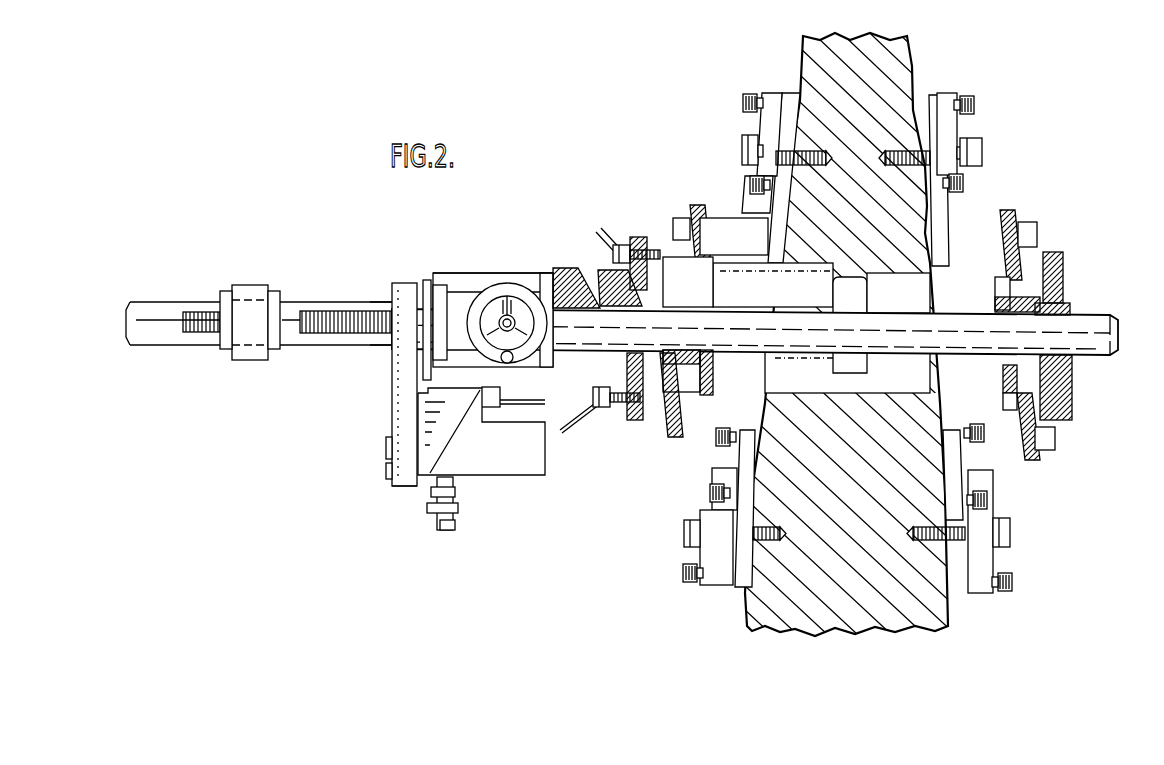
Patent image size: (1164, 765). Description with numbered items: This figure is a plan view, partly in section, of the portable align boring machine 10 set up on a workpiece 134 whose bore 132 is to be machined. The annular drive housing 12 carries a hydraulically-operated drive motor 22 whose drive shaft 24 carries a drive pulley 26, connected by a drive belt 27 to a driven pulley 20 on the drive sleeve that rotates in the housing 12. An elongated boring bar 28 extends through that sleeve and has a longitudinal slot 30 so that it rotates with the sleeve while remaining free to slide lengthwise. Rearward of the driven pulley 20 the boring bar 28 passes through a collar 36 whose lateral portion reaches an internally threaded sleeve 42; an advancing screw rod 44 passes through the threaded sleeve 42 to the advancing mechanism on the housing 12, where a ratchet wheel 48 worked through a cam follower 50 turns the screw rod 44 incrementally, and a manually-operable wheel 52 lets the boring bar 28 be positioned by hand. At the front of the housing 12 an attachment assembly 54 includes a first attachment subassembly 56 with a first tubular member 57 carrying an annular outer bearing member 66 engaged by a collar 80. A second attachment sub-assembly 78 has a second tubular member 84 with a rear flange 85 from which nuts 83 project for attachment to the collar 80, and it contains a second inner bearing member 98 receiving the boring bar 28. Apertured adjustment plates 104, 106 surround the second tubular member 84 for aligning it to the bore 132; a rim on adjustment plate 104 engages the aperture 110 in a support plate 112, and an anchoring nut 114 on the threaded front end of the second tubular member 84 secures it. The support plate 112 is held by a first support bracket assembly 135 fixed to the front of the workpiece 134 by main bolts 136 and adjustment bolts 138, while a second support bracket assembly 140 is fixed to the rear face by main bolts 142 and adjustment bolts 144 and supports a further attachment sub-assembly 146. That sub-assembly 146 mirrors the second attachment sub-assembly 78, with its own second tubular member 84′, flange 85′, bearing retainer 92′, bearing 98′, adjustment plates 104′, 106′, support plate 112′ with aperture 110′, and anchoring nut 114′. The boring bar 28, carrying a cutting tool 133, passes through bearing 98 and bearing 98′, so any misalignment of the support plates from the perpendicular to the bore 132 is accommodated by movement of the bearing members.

The portable align boring machine 10 is at (405, 268).
The annular drive housing 12 is at (485, 290).
The driven pulley 20 is at (388, 302).
The hydraulically-operated drive motor 22 is at (526, 462).
The drive shaft 24 is at (386, 447).
The drive pulley 26 is at (390, 476).
The drive belt 27 is at (400, 380).
The boring bar 28 is at (168, 301).
The longitudinal slot 30 is at (803, 327).
The collar 36 is at (246, 360).
The internally threaded sleeve 42 is at (290, 301).
The advancing screw rod 44 is at (337, 345).
The ratchet wheel 48 is at (424, 290).
The cam follower 50 is at (440, 292).
The manually-operable wheel 52 is at (443, 268).
The attachment assembly 54 is at (590, 260).
The first attachment subassembly 56 is at (495, 290).
The first tubular member 57 is at (562, 268).
The annular outer bearing member 66 is at (545, 402).
The second attachment sub-assembly 78 is at (640, 240).
The collar 80 is at (598, 408).
The nuts 83 is at (592, 262).
The flange 85 is at (632, 238).
The second inner bearing member 98 is at (700, 365).
The adjustment plate 104 is at (665, 437).
The adjustment plate 106 is at (632, 421).
The aperture 110 is at (713, 293).
The support plate 112 is at (660, 225).
The anchoring nut 114 is at (713, 272).
The bore 132 is at (822, 400).
The cutting tool 133 is at (872, 290).
The workpiece 134 is at (925, 622).
The first support bracket assembly 135 is at (703, 473).
The main bolts 136 is at (740, 148).
The adjustment bolts 138 is at (742, 100).
The second support bracket assembly 140 is at (975, 205).
The main bolts 142 is at (980, 152).
The adjustment bolts 144 is at (974, 105).
The attachment sub-assembly 146 is at (1046, 251).
The second tubular member 84 is at (787, 350).
The second tubular member 84′ is at (1003, 372).
The flange 85′ is at (1065, 272).
The bearing retainer 92′ is at (1072, 305).
The bearing 98′ is at (1073, 370).
The adjustment plate 104′ is at (1042, 431).
The adjustment plate 106′ is at (1057, 440).
The aperture 110′ is at (995, 292).
The support plate 112′ is at (1012, 212).
The anchoring nut 114′ is at (1005, 403).